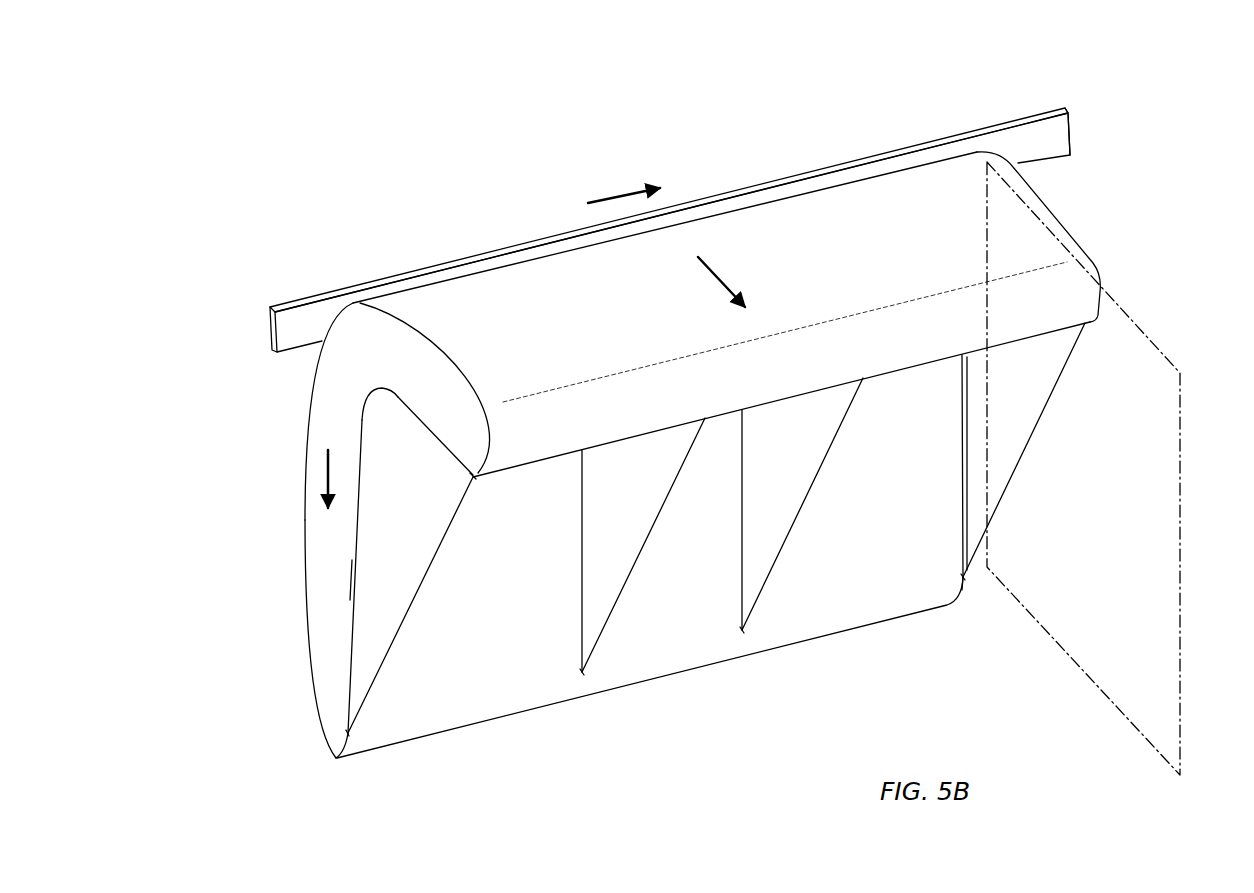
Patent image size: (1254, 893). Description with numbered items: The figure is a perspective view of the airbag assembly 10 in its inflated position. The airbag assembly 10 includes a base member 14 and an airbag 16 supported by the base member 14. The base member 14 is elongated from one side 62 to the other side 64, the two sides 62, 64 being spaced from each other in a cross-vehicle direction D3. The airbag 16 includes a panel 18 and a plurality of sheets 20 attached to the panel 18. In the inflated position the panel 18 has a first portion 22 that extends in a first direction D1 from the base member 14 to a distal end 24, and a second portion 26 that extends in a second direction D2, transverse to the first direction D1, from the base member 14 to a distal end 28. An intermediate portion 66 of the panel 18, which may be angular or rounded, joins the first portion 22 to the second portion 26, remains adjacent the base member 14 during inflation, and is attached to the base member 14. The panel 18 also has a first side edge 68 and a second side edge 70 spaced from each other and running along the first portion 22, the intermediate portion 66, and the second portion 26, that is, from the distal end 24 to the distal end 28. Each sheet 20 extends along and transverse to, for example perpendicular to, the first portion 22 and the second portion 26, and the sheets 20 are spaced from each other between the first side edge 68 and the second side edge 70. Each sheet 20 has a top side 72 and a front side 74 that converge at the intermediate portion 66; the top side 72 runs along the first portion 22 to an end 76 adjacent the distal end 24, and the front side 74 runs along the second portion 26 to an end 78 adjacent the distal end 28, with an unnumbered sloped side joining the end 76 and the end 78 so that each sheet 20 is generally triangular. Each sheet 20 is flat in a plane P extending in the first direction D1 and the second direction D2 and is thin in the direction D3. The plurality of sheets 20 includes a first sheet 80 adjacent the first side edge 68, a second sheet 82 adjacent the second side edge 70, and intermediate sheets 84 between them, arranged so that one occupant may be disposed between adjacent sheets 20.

The airbag assembly 10 is at (413, 126).
The base member 14 is at (1018, 108).
The airbag 16 is at (1092, 194).
The panel 18 is at (890, 527).
The sheets 20 is at (425, 588).
The first portion 22 is at (436, 392).
The distal end of the first portion 24 is at (460, 452).
The second portion 26 is at (326, 643).
The distal end of the second portion 28 is at (348, 692).
The side of the base member 62 is at (268, 318).
The side of the base member 64 is at (1072, 122).
The intermediate portion 66 is at (373, 382).
The first side edge 68 is at (402, 390).
The second side edge 70 is at (348, 577).
The top side 72 is at (447, 455).
The front side 74 is at (353, 553).
The end of the top side 76 is at (476, 482).
The end of the front side 78 is at (350, 736).
The first sheet 80 is at (400, 628).
The second sheet 82 is at (1030, 447).
The intermediate sheets 84 is at (623, 597).
The plane P is at (1153, 335).
The first direction D1 is at (728, 280).
The second direction D2 is at (327, 461).
The direction D3 is at (624, 183).